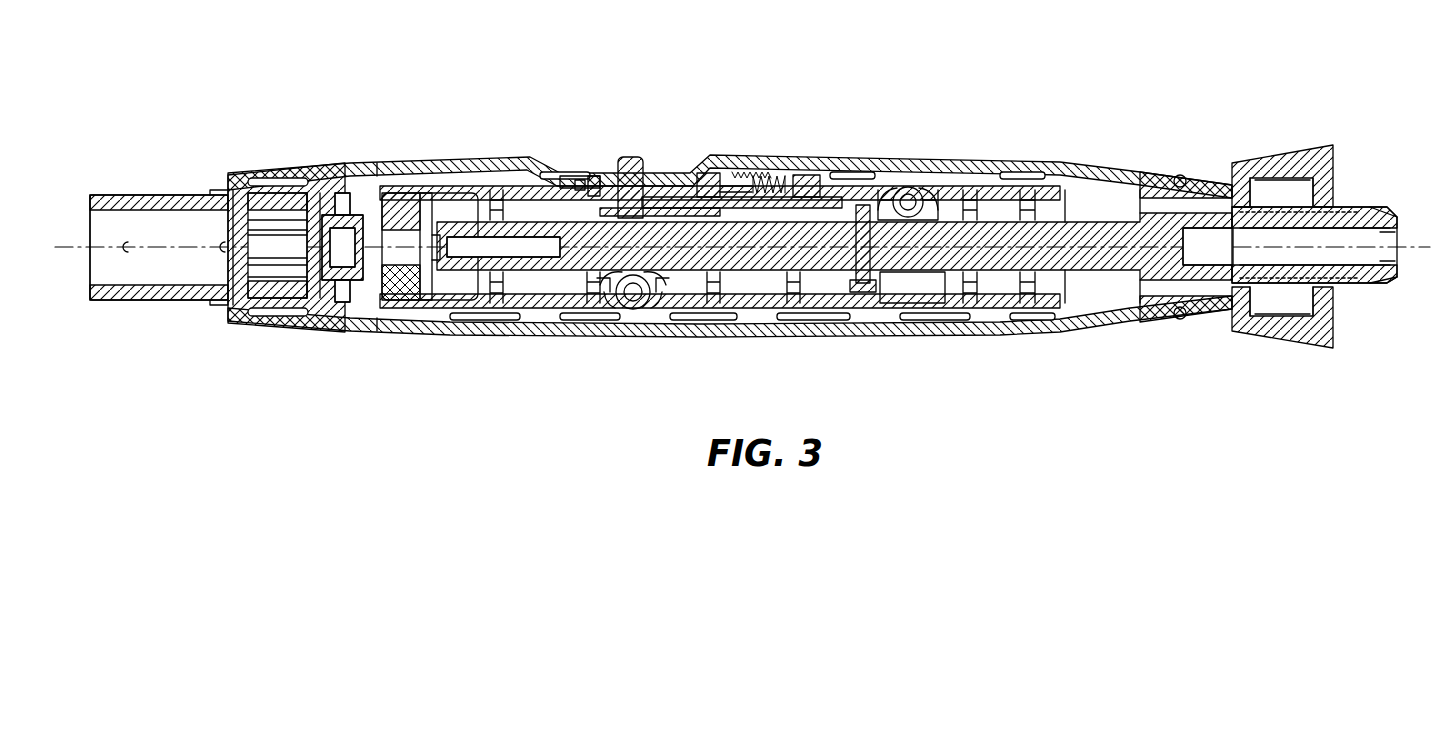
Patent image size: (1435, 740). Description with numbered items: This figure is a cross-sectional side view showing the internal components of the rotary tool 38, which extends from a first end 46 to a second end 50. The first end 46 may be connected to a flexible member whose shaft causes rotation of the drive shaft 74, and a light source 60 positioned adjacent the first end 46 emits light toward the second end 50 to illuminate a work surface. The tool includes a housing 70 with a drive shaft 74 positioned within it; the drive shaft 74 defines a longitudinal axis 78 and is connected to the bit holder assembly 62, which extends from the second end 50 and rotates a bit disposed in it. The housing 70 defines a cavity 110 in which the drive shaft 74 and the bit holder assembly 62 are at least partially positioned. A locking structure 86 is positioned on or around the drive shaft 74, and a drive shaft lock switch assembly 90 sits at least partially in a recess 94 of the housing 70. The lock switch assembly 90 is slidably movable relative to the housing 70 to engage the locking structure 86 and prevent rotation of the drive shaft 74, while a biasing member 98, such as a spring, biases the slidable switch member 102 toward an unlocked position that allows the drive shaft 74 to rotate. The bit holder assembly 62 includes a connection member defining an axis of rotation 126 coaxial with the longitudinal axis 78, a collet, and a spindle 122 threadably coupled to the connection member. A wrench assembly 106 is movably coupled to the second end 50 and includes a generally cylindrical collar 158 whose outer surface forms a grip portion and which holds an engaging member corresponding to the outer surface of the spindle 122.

The rotary tool 38 is at (893, 78).
The first end 46 is at (110, 320).
The second end 50 is at (1317, 364).
The light source 60 is at (232, 167).
The bit holder assembly 62 is at (1374, 193).
The housing 70 is at (418, 158).
The drive shaft 74 is at (1013, 240).
The longitudinal axis 78 is at (161, 223).
The locking structure 86 is at (868, 293).
The drive shaft lock switch assembly 90 is at (683, 225).
The recess 94 is at (600, 160).
The biasing member 98 is at (780, 175).
The slidable switch member 102 is at (630, 158).
The wrench assembly 106 is at (1297, 112).
The cavity 110 is at (937, 292).
The spindle 122 is at (1393, 285).
The axis of rotation 126 is at (166, 243).
The collar 158 is at (1270, 158).